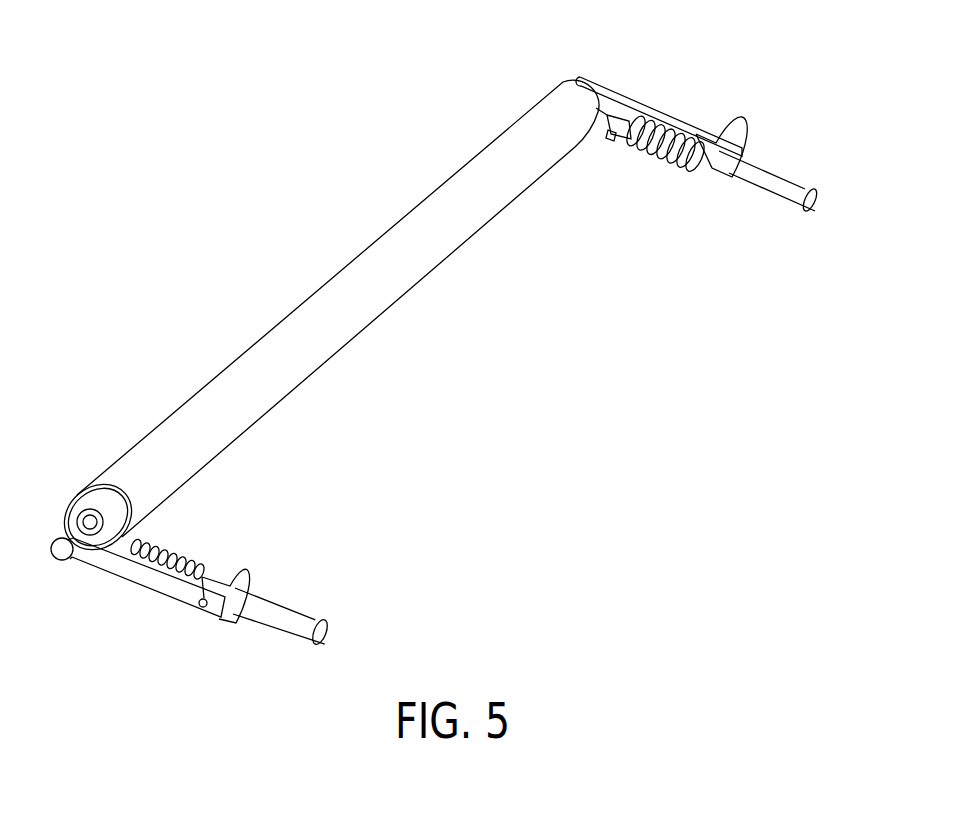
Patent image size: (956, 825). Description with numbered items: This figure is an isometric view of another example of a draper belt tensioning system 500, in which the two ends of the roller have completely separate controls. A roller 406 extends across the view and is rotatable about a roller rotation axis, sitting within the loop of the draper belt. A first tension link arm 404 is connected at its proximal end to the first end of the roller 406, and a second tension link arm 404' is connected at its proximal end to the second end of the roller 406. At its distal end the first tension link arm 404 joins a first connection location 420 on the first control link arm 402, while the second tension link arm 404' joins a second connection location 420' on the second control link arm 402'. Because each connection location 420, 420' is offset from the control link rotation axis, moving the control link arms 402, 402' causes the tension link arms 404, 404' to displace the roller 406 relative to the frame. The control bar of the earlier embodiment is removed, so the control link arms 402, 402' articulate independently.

The belt tensioning system 500 is at (178, 209).
The roller 406 is at (218, 382).
The first tension link arm 404 is at (138, 596).
The second tension link arm 404' is at (659, 90).
The first connection location 420 is at (226, 564).
The second connection location 420' is at (723, 127).
The first control link arm 402 is at (281, 586).
The second control link arm 402' is at (769, 155).